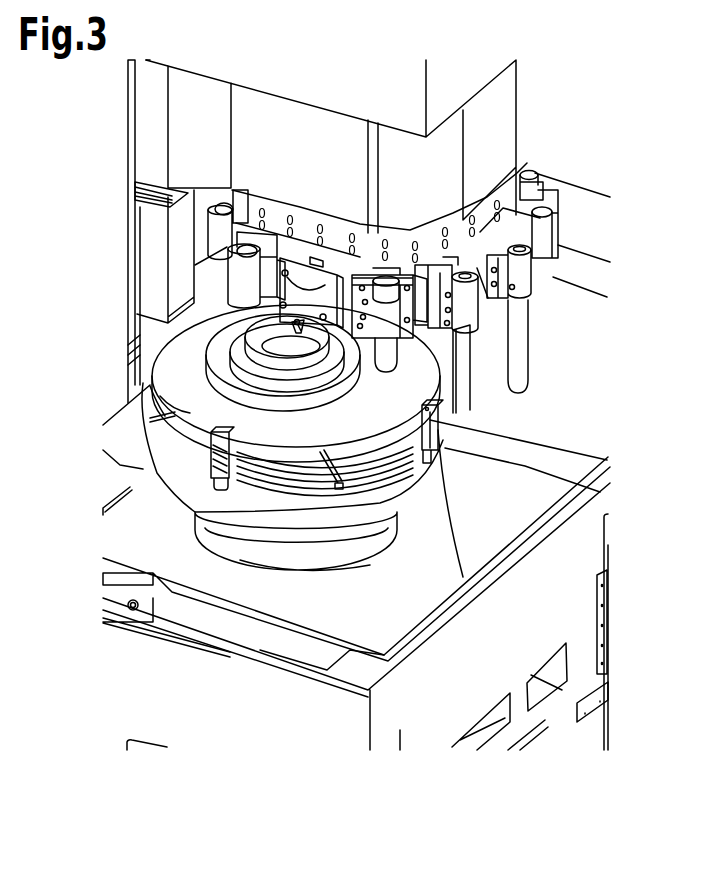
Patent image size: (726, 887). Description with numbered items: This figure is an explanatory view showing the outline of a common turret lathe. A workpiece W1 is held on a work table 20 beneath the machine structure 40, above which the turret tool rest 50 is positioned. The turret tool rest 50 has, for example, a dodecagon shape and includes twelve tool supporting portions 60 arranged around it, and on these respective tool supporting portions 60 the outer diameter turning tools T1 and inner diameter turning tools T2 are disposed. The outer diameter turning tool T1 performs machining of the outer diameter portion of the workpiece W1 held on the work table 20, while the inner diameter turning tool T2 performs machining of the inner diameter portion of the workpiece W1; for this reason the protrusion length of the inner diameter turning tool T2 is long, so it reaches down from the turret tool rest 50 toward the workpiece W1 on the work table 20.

The work table 20 is at (413, 475).
The machine housing 40 is at (441, 170).
The turret tool rest 50 is at (560, 228).
The tool supporting portion 60 is at (478, 306).
The outer diameter turning tool T1 is at (283, 323).
The inner diameter turning tool T2 is at (520, 375).
The workpiece W1 is at (497, 434).